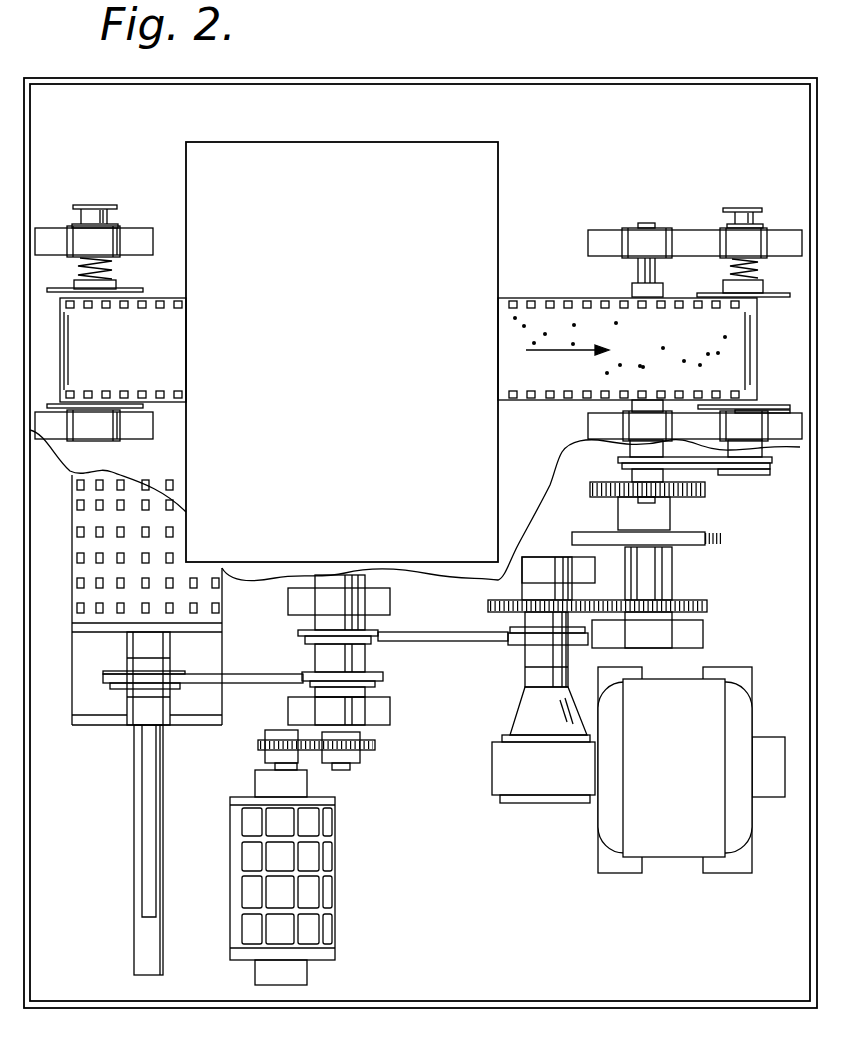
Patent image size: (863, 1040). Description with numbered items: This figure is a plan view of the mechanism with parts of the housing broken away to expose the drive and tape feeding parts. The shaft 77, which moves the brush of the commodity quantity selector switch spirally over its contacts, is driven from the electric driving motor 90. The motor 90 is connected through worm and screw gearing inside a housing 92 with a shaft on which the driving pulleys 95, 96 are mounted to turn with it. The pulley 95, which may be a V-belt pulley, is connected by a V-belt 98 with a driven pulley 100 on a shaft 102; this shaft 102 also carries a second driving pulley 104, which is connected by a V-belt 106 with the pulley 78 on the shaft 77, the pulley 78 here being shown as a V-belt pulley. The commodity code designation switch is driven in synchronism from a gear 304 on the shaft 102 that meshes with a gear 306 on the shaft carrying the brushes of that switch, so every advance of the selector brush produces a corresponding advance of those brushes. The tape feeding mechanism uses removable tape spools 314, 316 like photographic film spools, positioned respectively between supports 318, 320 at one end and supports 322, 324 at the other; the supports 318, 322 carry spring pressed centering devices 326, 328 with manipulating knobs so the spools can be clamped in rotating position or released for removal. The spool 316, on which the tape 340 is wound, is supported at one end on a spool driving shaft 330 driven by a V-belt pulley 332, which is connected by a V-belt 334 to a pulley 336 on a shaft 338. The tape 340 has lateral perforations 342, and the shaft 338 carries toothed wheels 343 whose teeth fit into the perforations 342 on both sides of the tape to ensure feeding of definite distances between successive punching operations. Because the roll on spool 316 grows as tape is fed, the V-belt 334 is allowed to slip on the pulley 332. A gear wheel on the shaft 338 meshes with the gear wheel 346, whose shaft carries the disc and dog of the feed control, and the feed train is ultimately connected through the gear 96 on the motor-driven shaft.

The shaft 77 is at (140, 863).
The pulley 78 is at (115, 672).
The driving motor 90 is at (678, 832).
The housing 92 is at (520, 758).
The driving pulley 95 is at (520, 650).
The driving pulley 96 is at (492, 606).
The V-belt 98 is at (470, 636).
The driven pulley 100 is at (300, 631).
The shaft 102 is at (345, 770).
The second driving pulley 104 is at (366, 675).
The V-belt 106 is at (243, 680).
The gear 304 is at (377, 745).
The gear 306 is at (258, 746).
The tape spool 314 is at (130, 290).
The tape spool 316 is at (764, 298).
The support 318 is at (112, 240).
The support 320 is at (92, 428).
The support 322 is at (738, 240).
The support 324 is at (752, 422).
The spring pressed centering device 326 is at (80, 284).
The spring pressed centering device 328 is at (728, 287).
The spool driving shaft 330 is at (777, 446).
The V-belt pulley 332 is at (745, 472).
The V-belt 334 is at (707, 469).
The pulley 336 is at (622, 463).
The shaft 338 is at (645, 273).
The tape 340 is at (542, 323).
The lateral perforations 342 is at (513, 300).
The toothed wheels 343 is at (415, 488).
The gear wheel 346 is at (612, 496).